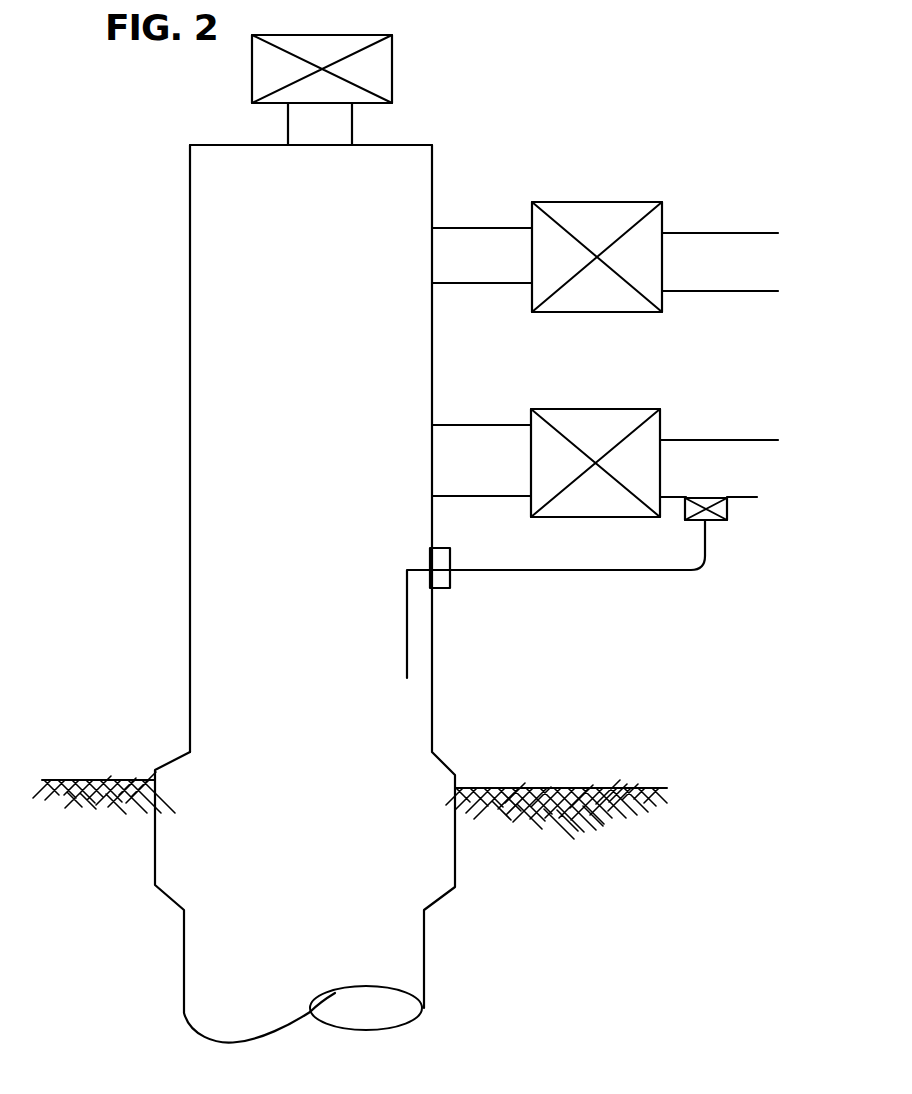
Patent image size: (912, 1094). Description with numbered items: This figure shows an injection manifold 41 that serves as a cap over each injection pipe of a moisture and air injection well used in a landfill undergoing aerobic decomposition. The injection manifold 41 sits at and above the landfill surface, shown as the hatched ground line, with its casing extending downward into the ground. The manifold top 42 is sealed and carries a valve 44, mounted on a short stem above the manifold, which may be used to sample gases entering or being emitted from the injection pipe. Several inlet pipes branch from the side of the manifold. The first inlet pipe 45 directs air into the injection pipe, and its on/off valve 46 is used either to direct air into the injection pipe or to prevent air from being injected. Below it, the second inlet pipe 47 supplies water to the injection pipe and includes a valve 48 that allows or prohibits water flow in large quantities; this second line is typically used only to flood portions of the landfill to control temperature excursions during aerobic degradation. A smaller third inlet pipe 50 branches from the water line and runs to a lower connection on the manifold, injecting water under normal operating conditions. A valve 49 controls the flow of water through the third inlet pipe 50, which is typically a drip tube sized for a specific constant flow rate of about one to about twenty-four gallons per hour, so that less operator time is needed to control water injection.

The injection manifold 41 is at (417, 695).
The manifold top 42 is at (420, 145).
The valve 44 is at (392, 60).
The first inlet pipe 45 is at (703, 233).
The valve 46 is at (614, 202).
The second inlet pipe 47 is at (705, 440).
The valve 48 is at (627, 409).
The valve 49 is at (727, 510).
The third inlet pipe 50 is at (633, 572).